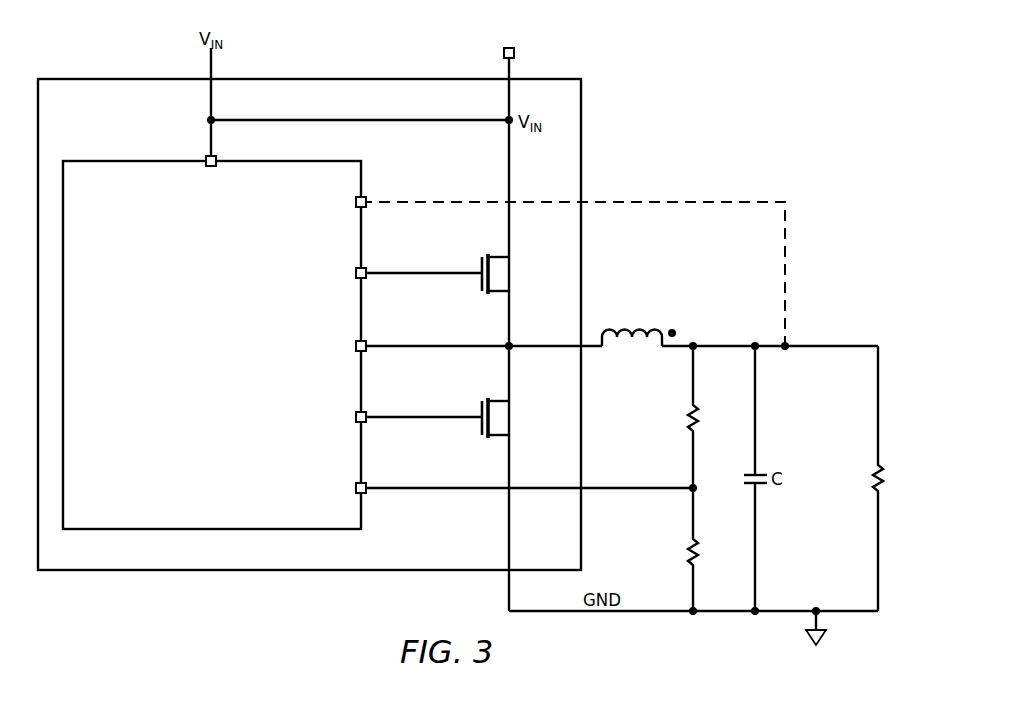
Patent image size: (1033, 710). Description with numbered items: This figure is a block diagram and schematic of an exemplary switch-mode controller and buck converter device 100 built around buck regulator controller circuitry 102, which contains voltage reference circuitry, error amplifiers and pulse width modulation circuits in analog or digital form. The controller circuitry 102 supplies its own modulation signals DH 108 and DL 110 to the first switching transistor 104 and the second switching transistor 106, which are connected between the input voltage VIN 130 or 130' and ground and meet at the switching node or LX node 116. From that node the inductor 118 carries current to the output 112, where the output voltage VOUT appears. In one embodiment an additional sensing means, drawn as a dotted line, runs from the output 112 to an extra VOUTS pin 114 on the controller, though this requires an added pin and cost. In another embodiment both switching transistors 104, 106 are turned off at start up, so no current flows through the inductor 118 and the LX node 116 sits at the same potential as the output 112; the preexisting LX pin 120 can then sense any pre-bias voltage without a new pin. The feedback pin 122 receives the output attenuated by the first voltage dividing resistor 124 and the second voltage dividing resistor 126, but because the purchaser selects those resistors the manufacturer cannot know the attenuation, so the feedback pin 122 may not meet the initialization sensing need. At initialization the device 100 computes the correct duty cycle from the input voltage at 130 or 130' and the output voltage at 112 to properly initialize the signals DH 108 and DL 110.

The buck converter device 100 is at (128, 76).
The buck regulator controller circuitry 102 is at (232, 426).
The switching transistor Q1 104 is at (478, 284).
The switching transistor Q2 106 is at (478, 428).
The modulation signal DH 108 is at (447, 272).
The modulation signal DL 110 is at (447, 415).
The output 112 is at (826, 349).
The VOUTS pin 114 is at (356, 200).
The LX node 116 is at (513, 350).
The inductor 118 is at (640, 330).
The LX pin 120 is at (356, 345).
The feedback pin 122 is at (356, 489).
The voltage dividing resistor R1 124 is at (690, 414).
The voltage dividing resistor R2 126 is at (690, 547).
The VIN input 130 is at (541, 321).
The VIN input 130' is at (200, 187).